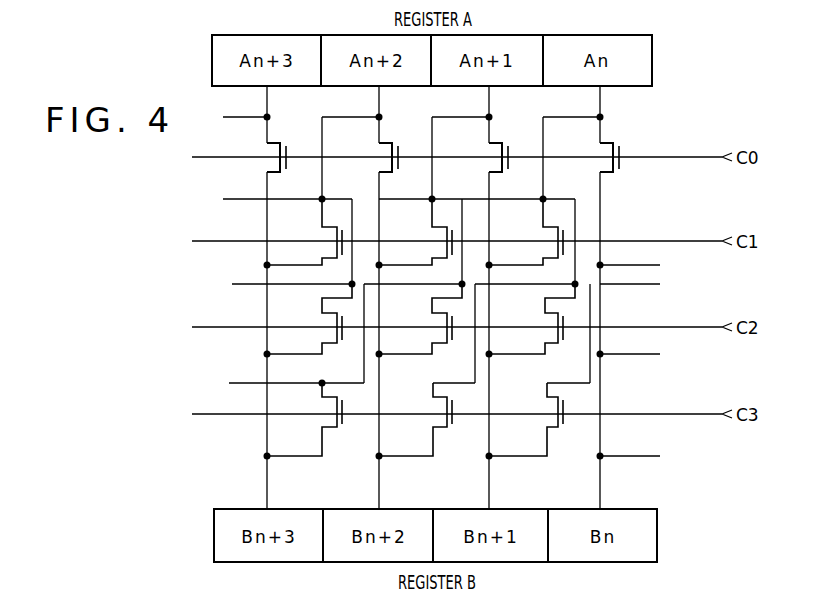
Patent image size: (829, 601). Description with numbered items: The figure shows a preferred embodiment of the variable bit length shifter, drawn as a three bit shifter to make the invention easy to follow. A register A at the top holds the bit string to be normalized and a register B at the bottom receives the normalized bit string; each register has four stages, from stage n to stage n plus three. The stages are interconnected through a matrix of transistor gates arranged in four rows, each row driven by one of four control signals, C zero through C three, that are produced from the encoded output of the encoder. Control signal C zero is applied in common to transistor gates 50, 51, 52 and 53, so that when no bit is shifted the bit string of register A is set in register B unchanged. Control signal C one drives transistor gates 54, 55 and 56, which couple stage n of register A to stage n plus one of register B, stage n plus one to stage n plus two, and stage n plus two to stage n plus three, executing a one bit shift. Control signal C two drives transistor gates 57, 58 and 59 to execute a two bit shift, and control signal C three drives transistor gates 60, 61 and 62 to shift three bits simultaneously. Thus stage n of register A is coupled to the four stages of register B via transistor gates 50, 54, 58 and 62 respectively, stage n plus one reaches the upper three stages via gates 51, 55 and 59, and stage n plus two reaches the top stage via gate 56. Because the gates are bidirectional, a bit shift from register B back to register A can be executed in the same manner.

The transistor gate 50 is at (616, 144).
The transistor gate 51 is at (504, 144).
The transistor gate 52 is at (394, 144).
The transistor gate 53 is at (282, 144).
The transistor gate 54 is at (559, 227).
The transistor gate 55 is at (448, 227).
The transistor gate 56 is at (338, 227).
The transistor gate 57 is at (546, 321).
The transistor gate 58 is at (430, 322).
The transistor gate 59 is at (324, 322).
The transistor gate 60 is at (546, 419).
The transistor gate 61 is at (428, 420).
The transistor gate 62 is at (318, 420).